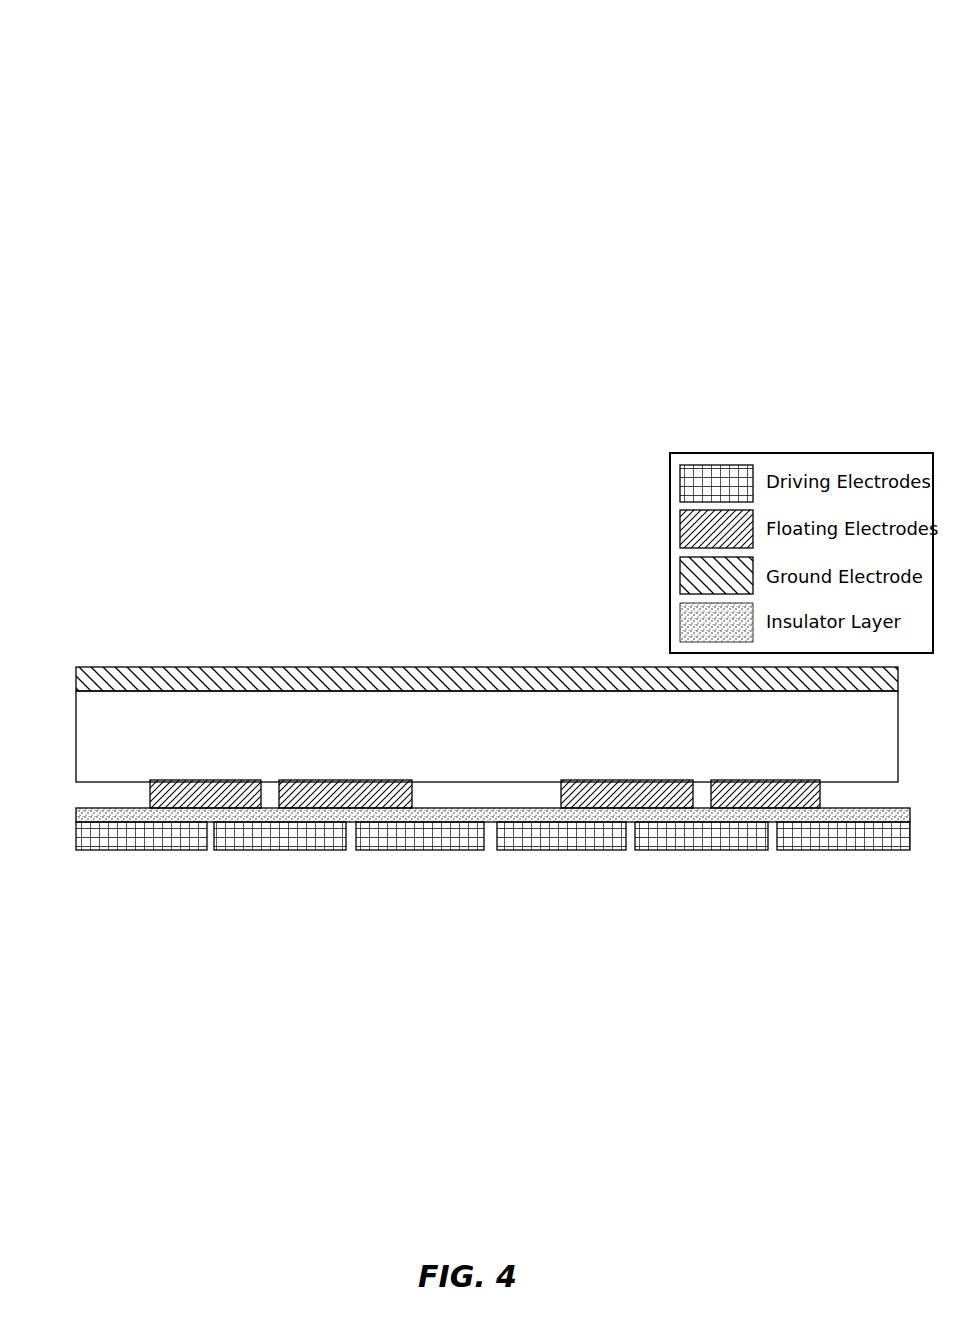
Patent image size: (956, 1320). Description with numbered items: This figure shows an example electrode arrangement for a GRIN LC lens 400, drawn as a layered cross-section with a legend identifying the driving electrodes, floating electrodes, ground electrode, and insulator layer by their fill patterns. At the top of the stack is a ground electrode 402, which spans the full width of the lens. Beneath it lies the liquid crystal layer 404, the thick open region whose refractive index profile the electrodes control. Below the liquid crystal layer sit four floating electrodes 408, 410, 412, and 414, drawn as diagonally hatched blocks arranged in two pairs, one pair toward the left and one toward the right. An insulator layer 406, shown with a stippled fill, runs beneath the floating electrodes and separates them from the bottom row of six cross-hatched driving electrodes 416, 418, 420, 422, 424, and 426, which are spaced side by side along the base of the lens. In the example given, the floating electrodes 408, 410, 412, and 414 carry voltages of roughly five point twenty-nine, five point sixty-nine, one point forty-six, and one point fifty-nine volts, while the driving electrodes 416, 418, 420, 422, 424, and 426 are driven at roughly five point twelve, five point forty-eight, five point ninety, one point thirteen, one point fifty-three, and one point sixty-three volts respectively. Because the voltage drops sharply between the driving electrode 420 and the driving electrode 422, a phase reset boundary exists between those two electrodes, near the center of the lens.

The GRIN LC lens 400 is at (92, 78).
The ground electrode 402 is at (375, 677).
The liquid crystal layer 404 is at (90, 739).
The insulator layer 406 is at (90, 817).
The floating electrode 408 is at (205, 797).
The floating electrode 410 is at (345, 797).
The floating electrode 412 is at (620, 797).
The floating electrode 414 is at (757, 797).
The driving electrode 416 is at (123, 843).
The driving electrode 418 is at (263, 843).
The driving electrode 420 is at (413, 843).
The driving electrode 422 is at (533, 843).
The driving electrode 424 is at (673, 843).
The driving electrode 426 is at (832, 843).